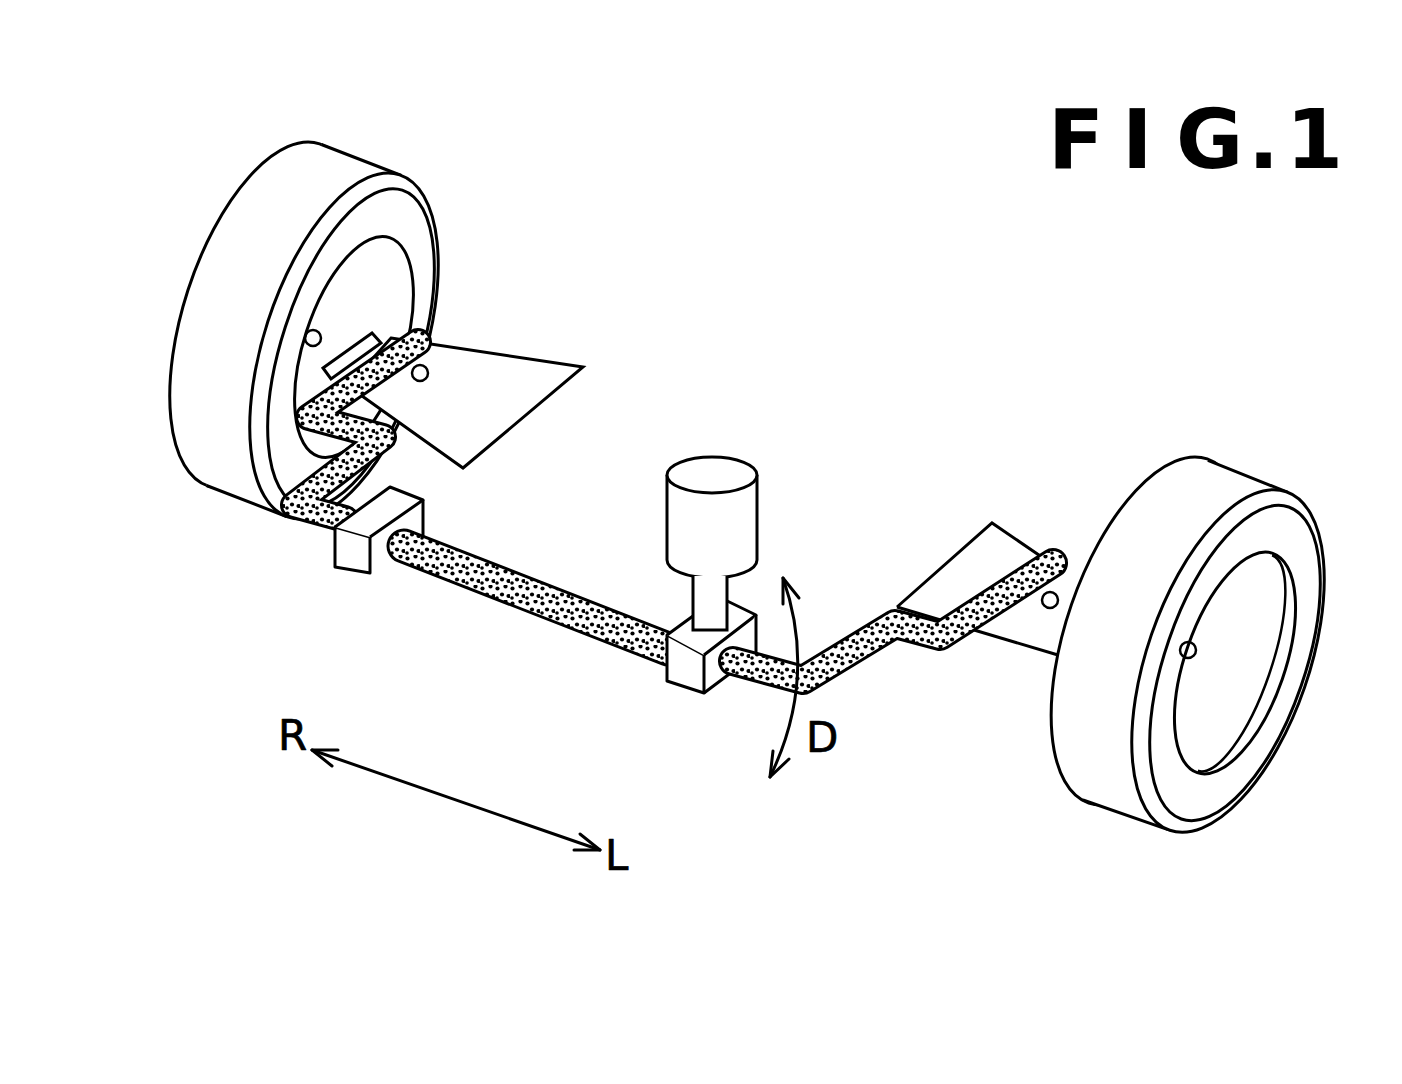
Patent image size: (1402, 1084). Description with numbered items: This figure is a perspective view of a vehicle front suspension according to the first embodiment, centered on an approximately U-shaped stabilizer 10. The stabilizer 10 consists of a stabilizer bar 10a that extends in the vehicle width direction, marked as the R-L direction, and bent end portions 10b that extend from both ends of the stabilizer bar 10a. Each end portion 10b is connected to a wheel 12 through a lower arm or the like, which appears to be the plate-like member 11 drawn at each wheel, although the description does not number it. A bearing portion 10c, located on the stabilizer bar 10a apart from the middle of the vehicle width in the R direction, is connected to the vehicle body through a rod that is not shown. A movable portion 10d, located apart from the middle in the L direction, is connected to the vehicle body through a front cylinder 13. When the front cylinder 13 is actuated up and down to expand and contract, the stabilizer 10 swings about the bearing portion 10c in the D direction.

The stabilizer 10 is at (610, 555).
The stabilizer bar 10a is at (527, 606).
The end portions 10b is at (252, 490).
The bearing portion 10c is at (354, 563).
The movable portion 10d is at (684, 670).
The suspension links 11 is at (501, 374).
The wheel 12 is at (180, 419).
The front cylinder 13 is at (713, 466).